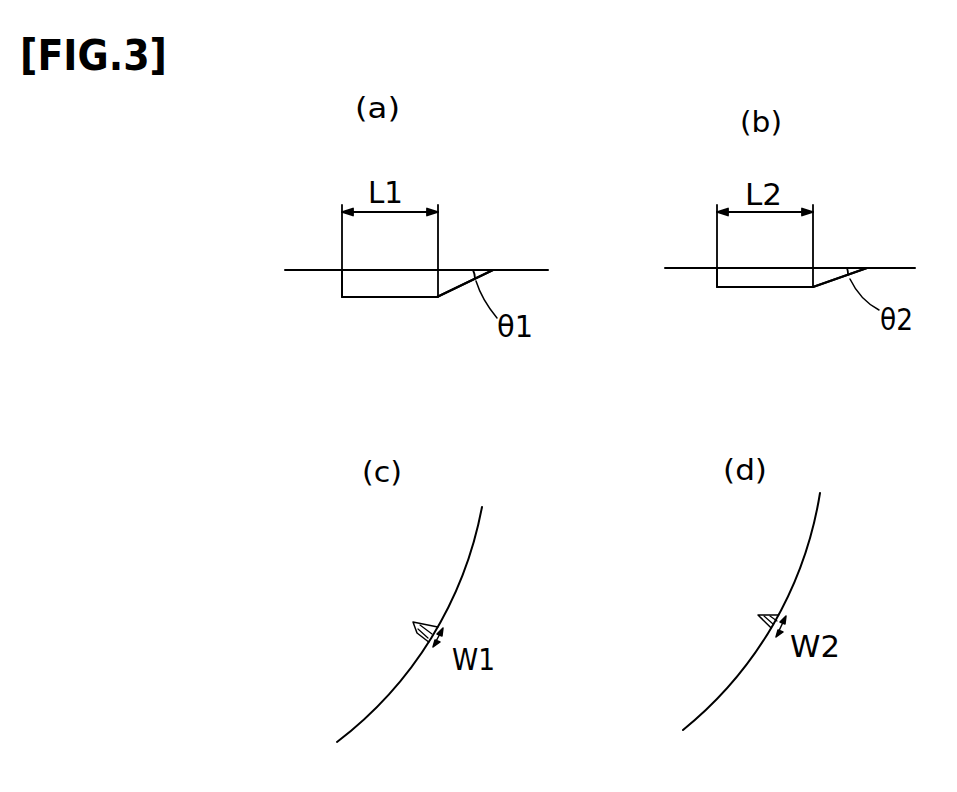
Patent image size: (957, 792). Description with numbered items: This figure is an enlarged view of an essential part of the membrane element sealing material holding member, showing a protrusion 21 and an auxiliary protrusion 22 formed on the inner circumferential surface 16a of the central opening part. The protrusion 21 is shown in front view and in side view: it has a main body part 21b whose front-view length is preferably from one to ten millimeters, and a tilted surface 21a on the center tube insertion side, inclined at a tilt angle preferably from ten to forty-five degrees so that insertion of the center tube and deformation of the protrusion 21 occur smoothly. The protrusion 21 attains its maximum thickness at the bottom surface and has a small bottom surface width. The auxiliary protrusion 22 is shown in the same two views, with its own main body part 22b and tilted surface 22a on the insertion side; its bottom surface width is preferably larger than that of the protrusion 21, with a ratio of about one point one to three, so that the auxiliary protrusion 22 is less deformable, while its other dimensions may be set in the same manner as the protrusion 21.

The inner circumferential surface 16a is at (318, 272).
The protrusion 21 is at (334, 322).
The tilted surface 21a is at (453, 298).
The main body part 21b is at (385, 298).
The auxiliary protrusion 22 is at (709, 314).
The tilted surface 22a is at (833, 288).
The main body part 22b is at (763, 288).